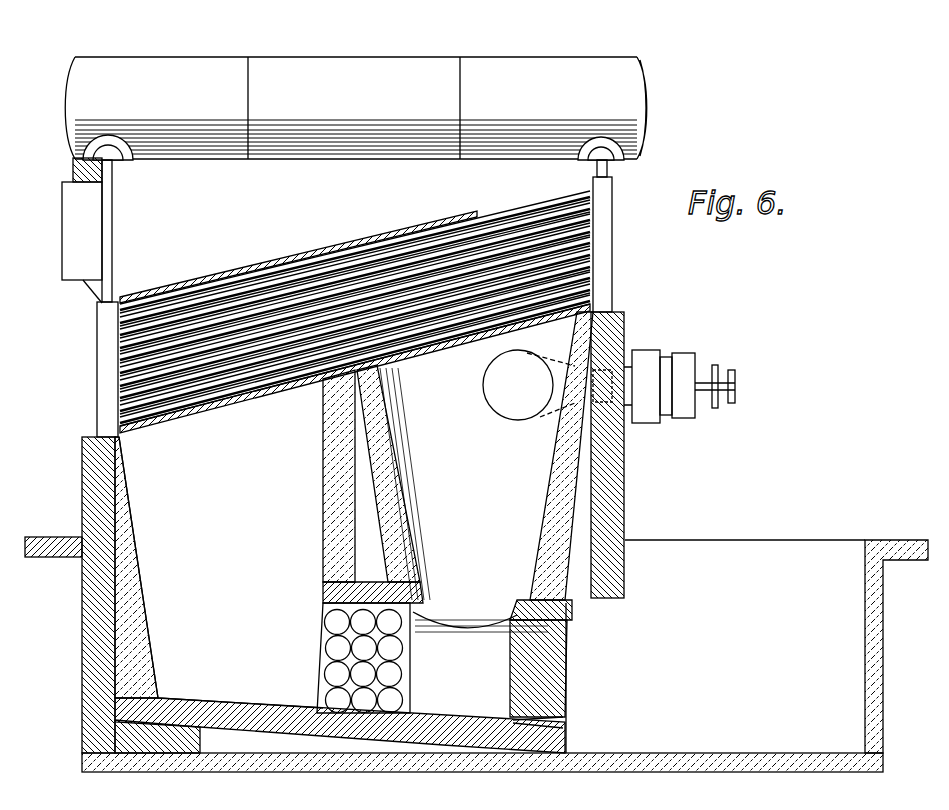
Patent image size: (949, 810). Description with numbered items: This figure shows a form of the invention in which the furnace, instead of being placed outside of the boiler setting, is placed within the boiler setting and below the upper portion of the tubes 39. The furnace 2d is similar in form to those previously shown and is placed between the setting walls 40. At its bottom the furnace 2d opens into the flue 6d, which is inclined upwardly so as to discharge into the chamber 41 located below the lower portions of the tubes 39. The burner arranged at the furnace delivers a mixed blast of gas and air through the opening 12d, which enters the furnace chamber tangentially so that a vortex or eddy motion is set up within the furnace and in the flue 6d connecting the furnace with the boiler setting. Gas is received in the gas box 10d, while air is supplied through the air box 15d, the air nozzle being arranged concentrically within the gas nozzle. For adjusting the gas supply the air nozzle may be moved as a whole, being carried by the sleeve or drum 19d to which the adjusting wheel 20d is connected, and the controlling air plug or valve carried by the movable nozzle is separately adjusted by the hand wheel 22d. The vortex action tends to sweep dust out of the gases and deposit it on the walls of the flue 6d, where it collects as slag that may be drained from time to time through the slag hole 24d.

The tubes 39 is at (520, 226).
The setting walls 40 is at (323, 482).
The chamber 41 is at (221, 572).
The furnace 2d is at (475, 472).
The flue 6d is at (444, 676).
The gas box 10d is at (652, 350).
The opening 12d is at (502, 400).
The air box 15d is at (689, 353).
The sleeve or drum 19d is at (667, 416).
The adjusting wheel 20d is at (716, 365).
The hand wheel 22d is at (735, 386).
The slag hole 24d is at (563, 723).